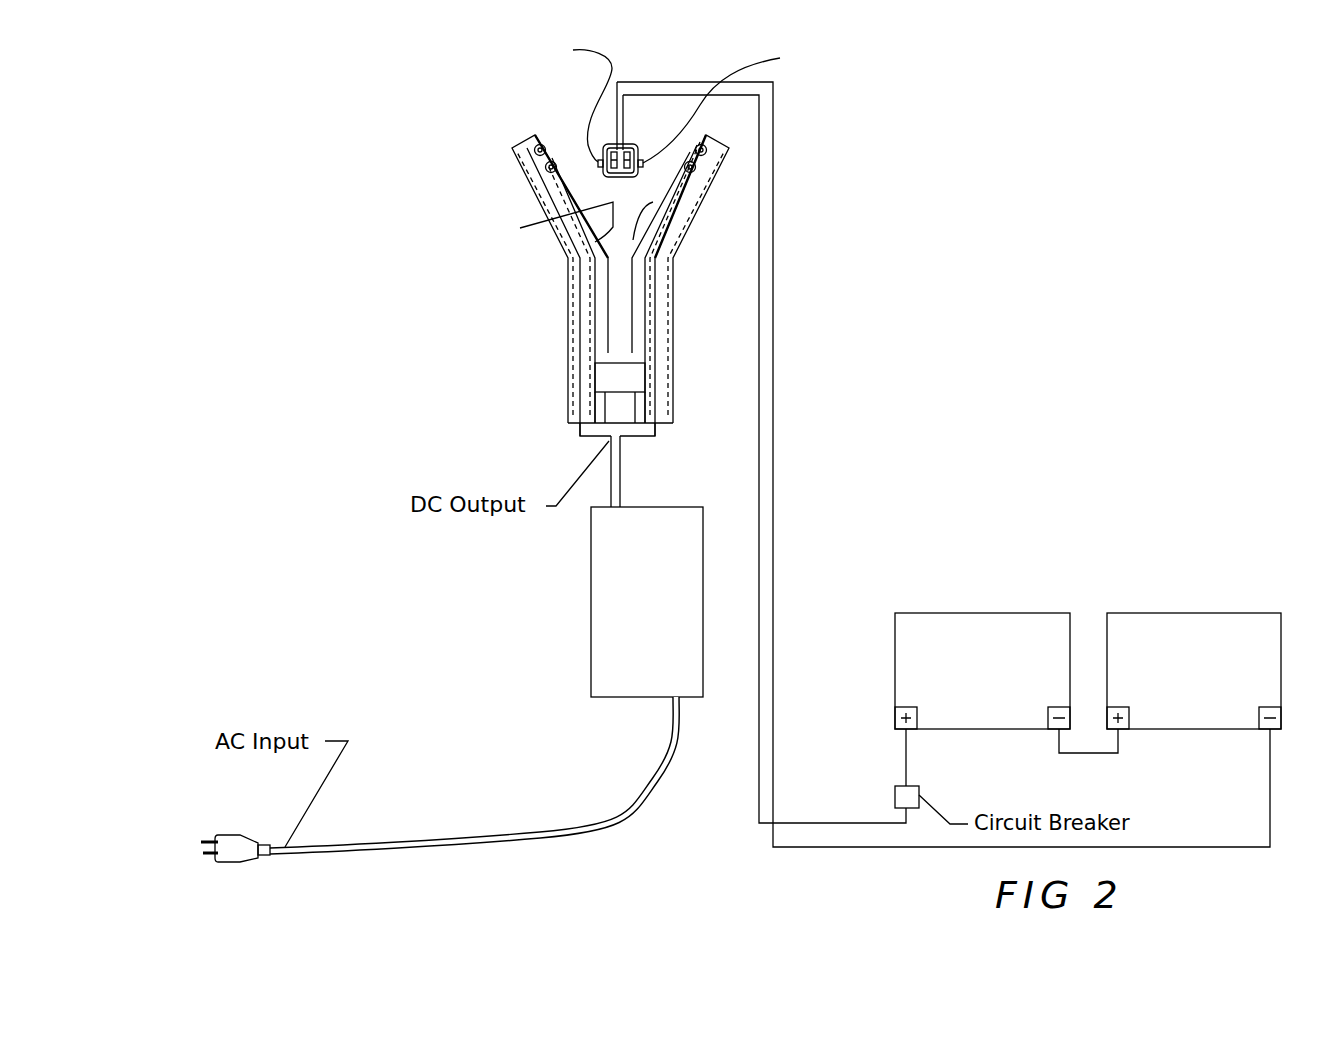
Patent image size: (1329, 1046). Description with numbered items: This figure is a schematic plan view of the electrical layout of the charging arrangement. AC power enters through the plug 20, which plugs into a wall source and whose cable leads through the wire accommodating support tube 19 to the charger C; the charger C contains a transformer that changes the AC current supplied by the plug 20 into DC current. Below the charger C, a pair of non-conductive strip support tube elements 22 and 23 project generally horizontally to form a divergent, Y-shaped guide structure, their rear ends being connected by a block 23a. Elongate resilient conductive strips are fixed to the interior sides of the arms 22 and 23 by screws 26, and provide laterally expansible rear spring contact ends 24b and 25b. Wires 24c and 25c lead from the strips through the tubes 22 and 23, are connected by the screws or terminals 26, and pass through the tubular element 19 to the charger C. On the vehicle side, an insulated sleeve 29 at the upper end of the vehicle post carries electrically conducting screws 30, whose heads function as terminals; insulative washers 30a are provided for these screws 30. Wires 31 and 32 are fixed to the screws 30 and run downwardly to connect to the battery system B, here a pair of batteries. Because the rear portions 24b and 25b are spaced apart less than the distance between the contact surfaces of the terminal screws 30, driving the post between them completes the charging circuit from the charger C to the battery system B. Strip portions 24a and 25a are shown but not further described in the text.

The wire accommodating support tube 19 is at (632, 412).
The plug 20 is at (250, 862).
The strip support tube element 22 is at (556, 195).
The strip support tube element 23 is at (722, 172).
The block 23a is at (632, 375).
The first cable conductor 24a is at (537, 236).
The rear spring contact end 24b is at (595, 323).
The wire 24c is at (582, 285).
The second cable conductor 25a is at (653, 202).
The rear spring contact end 25b is at (650, 330).
The wire 25c is at (655, 285).
The screws 26 is at (577, 100).
The insulated sleeve 29 is at (650, 144).
The electrically conducting screws 30 is at (679, 96).
The insulative washers 30a is at (645, 807).
The wire 31 is at (755, 405).
The wire 32 is at (773, 417).
The battery system B is at (1172, 611).
The charger C is at (602, 556).